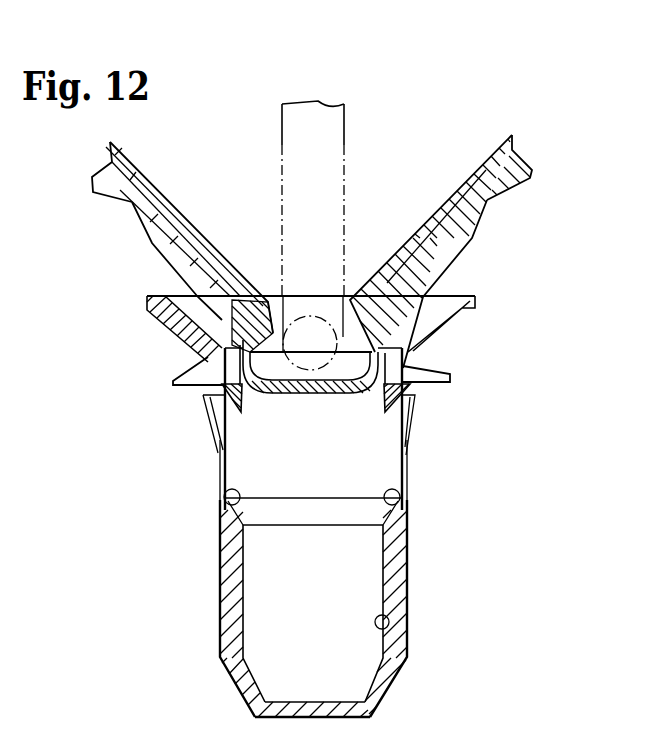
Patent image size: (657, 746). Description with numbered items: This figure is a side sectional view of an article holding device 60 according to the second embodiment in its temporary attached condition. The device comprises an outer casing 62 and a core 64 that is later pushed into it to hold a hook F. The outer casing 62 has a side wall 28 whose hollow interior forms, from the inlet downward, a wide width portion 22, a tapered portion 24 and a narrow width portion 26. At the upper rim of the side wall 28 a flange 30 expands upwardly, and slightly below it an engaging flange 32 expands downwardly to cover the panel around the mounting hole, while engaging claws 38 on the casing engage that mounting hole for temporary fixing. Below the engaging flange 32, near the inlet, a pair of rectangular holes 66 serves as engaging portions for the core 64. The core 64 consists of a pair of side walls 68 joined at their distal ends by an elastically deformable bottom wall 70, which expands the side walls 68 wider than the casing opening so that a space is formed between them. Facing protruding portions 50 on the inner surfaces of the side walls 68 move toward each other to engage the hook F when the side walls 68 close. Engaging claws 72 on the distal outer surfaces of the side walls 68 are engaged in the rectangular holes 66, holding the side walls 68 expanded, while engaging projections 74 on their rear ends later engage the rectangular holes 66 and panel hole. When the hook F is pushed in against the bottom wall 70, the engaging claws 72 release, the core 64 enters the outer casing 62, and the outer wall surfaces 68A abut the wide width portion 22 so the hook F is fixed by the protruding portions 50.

The article holding device 60 is at (480, 70).
The hook F is at (348, 168).
The bottom wall 70 is at (297, 392).
The outer wall surfaces 68A is at (150, 232).
The side walls 68 is at (172, 242).
The engaging projections 74 is at (98, 180).
The core 64 is at (413, 240).
The protruding portions 50 is at (268, 292).
The outer casing 62 is at (159, 293).
The flange 30 is at (474, 303).
The engaging flange 32 is at (445, 370).
The engaging claws 38 is at (205, 402).
The engaging claws 72 is at (212, 428).
The rectangular holes 66 is at (216, 458).
The wide width portion 22 is at (226, 520).
The tapered portion 24 is at (404, 512).
The side wall 28 is at (220, 628).
The narrow width portion 26 is at (389, 623).